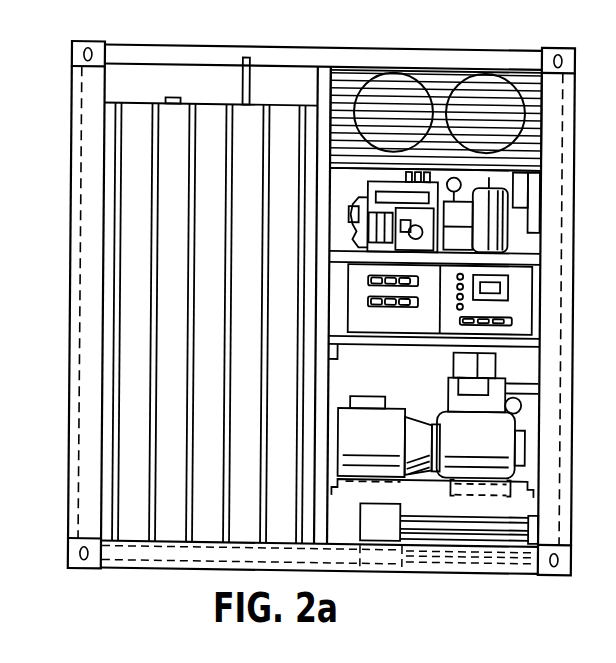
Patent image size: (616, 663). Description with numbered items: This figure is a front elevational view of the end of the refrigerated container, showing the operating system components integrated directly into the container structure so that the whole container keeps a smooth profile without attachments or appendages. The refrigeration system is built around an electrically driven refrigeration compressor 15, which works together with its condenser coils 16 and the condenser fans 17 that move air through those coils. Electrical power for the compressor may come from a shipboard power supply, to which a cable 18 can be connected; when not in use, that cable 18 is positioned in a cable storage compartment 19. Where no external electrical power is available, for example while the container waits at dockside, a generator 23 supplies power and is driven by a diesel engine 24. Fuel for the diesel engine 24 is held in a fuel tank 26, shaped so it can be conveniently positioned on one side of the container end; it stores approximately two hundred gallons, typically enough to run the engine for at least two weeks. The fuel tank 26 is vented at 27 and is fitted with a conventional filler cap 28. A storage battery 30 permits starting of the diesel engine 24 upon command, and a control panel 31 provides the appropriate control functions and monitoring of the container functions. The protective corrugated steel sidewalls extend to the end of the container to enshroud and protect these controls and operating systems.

The refrigeration compressor 15 is at (438, 228).
The condenser coils 16 is at (530, 140).
The condenser fans 17 is at (446, 105).
The cable 18 is at (530, 532).
The cable storage compartment 19 is at (530, 521).
The generator 23 is at (385, 418).
The diesel engine 24 is at (502, 430).
The fuel tank 26 is at (116, 291).
The vent 27 is at (252, 77).
The filler cap 28 is at (171, 97).
The storage battery 30 is at (378, 553).
The control panel 31 is at (522, 300).